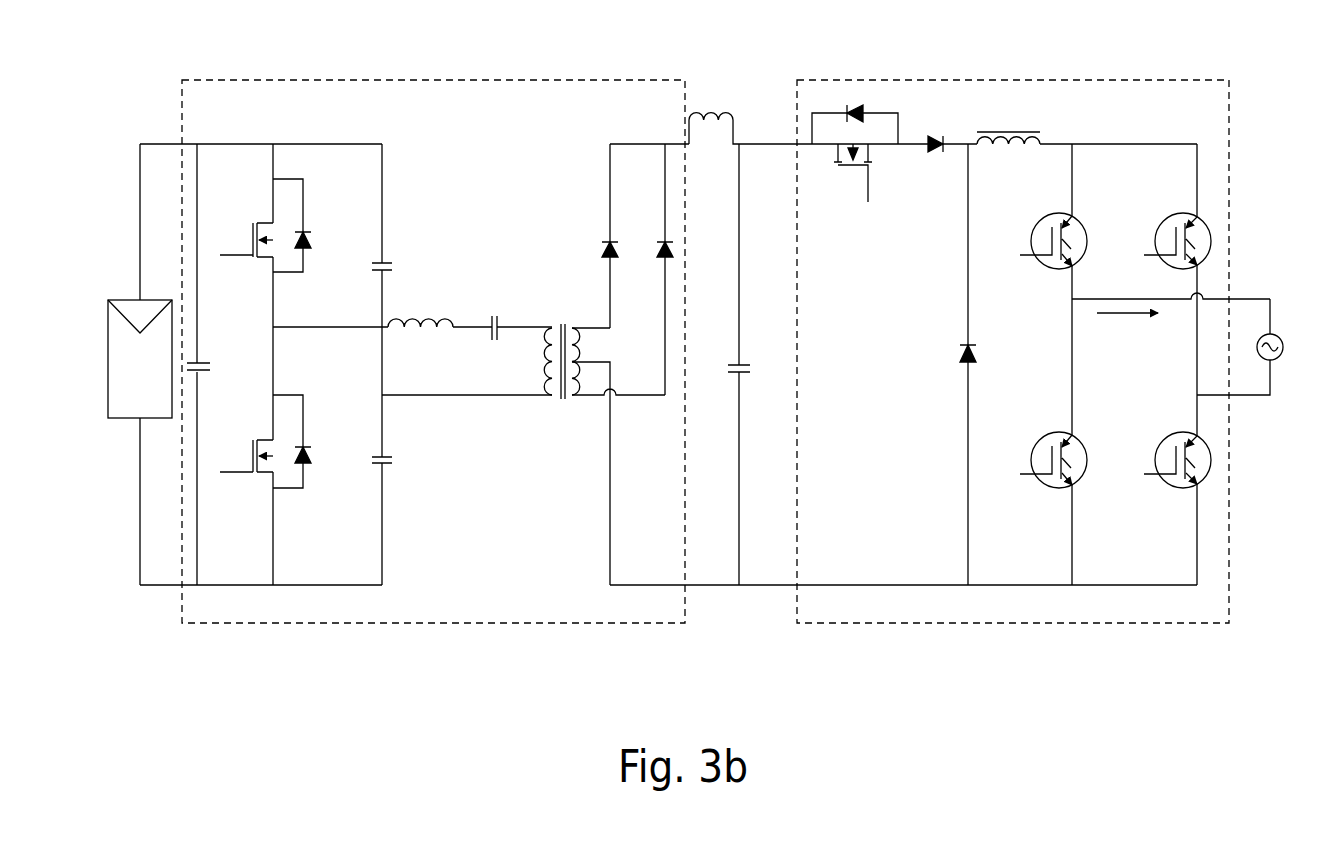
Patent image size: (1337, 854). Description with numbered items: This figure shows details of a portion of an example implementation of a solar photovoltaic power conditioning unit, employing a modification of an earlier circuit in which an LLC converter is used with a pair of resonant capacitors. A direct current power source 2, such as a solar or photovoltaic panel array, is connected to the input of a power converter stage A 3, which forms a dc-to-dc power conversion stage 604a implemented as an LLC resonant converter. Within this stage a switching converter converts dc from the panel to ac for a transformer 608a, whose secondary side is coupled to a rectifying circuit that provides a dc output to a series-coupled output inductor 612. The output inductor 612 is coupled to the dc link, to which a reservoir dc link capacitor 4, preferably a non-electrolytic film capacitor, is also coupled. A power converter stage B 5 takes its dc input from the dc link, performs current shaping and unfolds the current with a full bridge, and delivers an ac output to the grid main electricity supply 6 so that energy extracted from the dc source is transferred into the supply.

The direct current (dc) power source 2 is at (114, 437).
The power converter stage A 3 is at (202, 627).
The reservoir (dc link) capacitor 4 is at (724, 607).
The power converter stage B 5 is at (822, 627).
The grid main electricity supply 6 is at (1268, 413).
The dc-to-dc power conversion stage 604a is at (168, 610).
The transformer 608a is at (553, 413).
The output inductor 612 is at (725, 78).